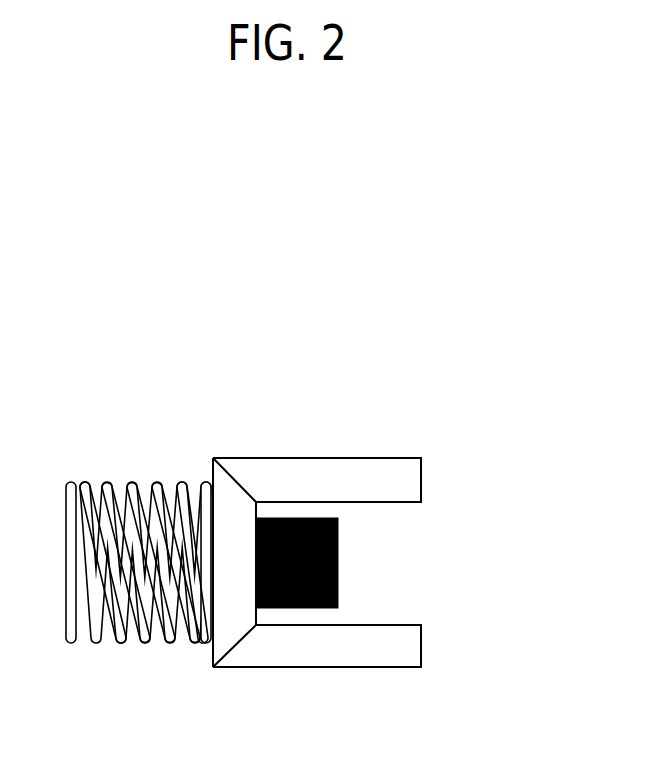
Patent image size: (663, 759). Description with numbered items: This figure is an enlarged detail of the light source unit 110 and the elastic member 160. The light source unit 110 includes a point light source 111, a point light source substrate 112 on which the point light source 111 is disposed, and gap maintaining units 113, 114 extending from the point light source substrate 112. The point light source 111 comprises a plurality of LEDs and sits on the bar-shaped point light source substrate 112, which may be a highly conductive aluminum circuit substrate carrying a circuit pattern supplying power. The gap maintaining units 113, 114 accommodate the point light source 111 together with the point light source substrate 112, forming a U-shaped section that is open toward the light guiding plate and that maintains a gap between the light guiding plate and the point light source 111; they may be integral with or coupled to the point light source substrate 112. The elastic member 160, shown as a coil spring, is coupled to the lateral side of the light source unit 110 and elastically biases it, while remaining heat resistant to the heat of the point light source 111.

The light source unit 110 is at (361, 514).
The point light source 111 is at (300, 607).
The point light source substrate 112 is at (237, 555).
The gap maintaining unit 113 is at (370, 476).
The gap maintaining unit 114 is at (370, 653).
The elastic member 160 is at (65, 661).